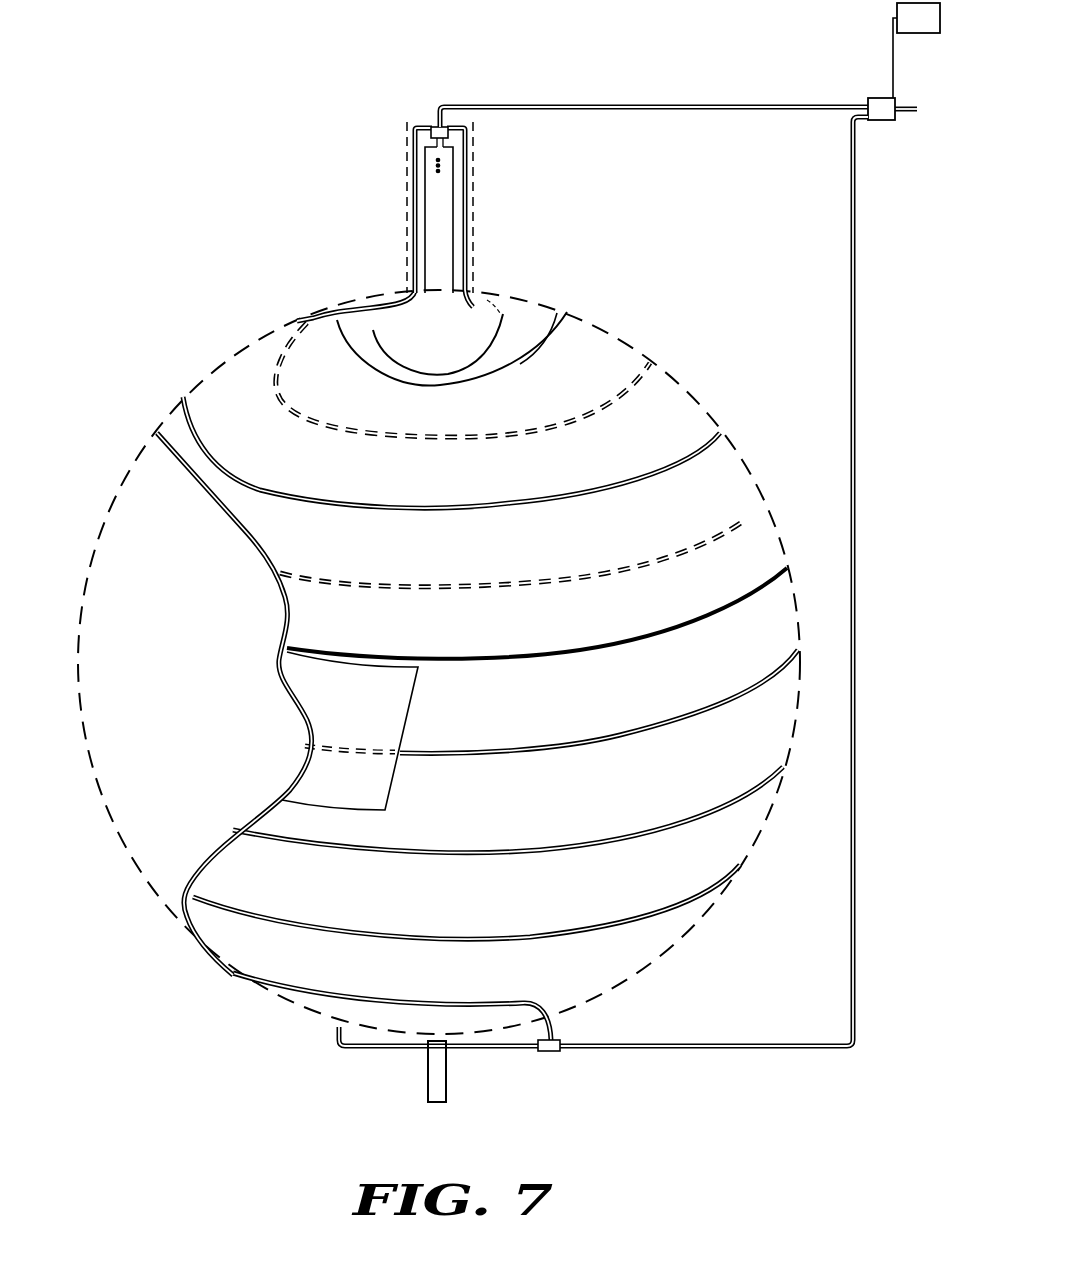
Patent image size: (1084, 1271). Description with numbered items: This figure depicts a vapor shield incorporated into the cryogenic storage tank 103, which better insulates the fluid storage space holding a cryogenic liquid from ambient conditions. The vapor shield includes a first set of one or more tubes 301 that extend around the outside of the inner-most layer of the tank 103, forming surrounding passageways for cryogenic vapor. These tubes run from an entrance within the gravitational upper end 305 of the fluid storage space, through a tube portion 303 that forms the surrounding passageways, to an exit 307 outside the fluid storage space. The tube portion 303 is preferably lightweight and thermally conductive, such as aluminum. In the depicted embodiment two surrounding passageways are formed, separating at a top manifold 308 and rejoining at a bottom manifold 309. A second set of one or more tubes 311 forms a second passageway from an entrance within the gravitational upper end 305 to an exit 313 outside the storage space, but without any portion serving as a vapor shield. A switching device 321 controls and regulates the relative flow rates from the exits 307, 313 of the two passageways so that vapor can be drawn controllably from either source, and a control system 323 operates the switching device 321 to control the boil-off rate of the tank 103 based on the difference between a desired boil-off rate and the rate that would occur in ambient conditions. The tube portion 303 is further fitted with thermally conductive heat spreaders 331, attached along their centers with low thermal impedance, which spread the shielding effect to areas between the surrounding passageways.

The tank 103 is at (190, 334).
The first set of one or more tubes 301 is at (413, 188).
The tube portion 303 is at (578, 749).
The gravitational upper end 305 is at (433, 316).
The exit 307 is at (858, 128).
The top manifold 308 is at (433, 127).
The bottom manifold 309 is at (547, 1052).
The second set of one or more tubes 311 is at (548, 104).
The exit 313 is at (865, 104).
The switching device 321 is at (877, 97).
The control system 323 is at (935, 30).
The thermally conductive heat spreaders 331 is at (397, 774).